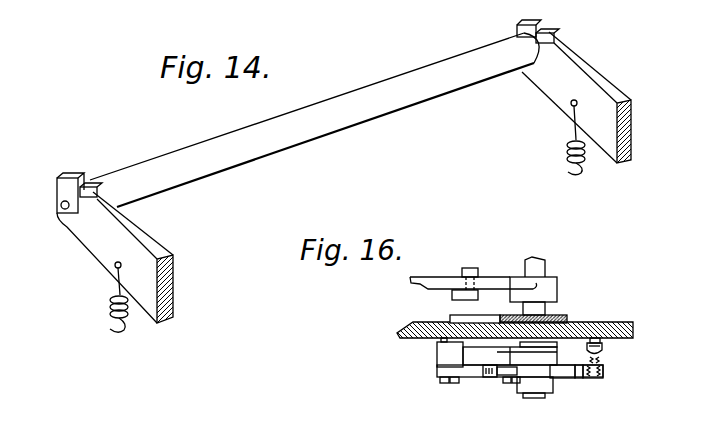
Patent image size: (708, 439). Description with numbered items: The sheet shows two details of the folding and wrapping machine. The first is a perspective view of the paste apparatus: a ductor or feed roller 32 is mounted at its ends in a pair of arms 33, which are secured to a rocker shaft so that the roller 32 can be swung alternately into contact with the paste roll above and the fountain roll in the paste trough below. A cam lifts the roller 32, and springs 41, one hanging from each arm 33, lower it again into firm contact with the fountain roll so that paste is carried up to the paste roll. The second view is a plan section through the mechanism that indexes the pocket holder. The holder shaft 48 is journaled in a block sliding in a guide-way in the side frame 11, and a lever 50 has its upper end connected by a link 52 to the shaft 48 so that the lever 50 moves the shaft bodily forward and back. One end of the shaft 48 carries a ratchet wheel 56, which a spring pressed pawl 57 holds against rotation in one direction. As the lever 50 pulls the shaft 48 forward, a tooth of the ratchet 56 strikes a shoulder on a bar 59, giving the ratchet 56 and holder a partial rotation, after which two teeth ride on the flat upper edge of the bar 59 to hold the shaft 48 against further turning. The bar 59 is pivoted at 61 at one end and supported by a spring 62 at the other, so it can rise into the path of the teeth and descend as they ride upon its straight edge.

In FIG. 14, the ductor roller 32 is at (178, 157).
In FIG. 14, the arms 33 is at (153, 250).
In FIG. 14, the springs 41 is at (100, 322).
In FIG. 16, the lever 50 is at (423, 285).
In FIG. 16, the links 52 is at (497, 292).
In FIG. 16, the holder shaft 48 is at (545, 265).
In FIG. 16, the side frame 11 is at (608, 327).
In FIG. 16, the spring 62 is at (603, 365).
In FIG. 16, the bar 59 is at (580, 377).
In FIG. 16, the ratchet wheel 56 is at (563, 377).
In FIG. 16, the pawl 57 is at (503, 375).
In FIG. 16, the pivot 61 is at (457, 385).